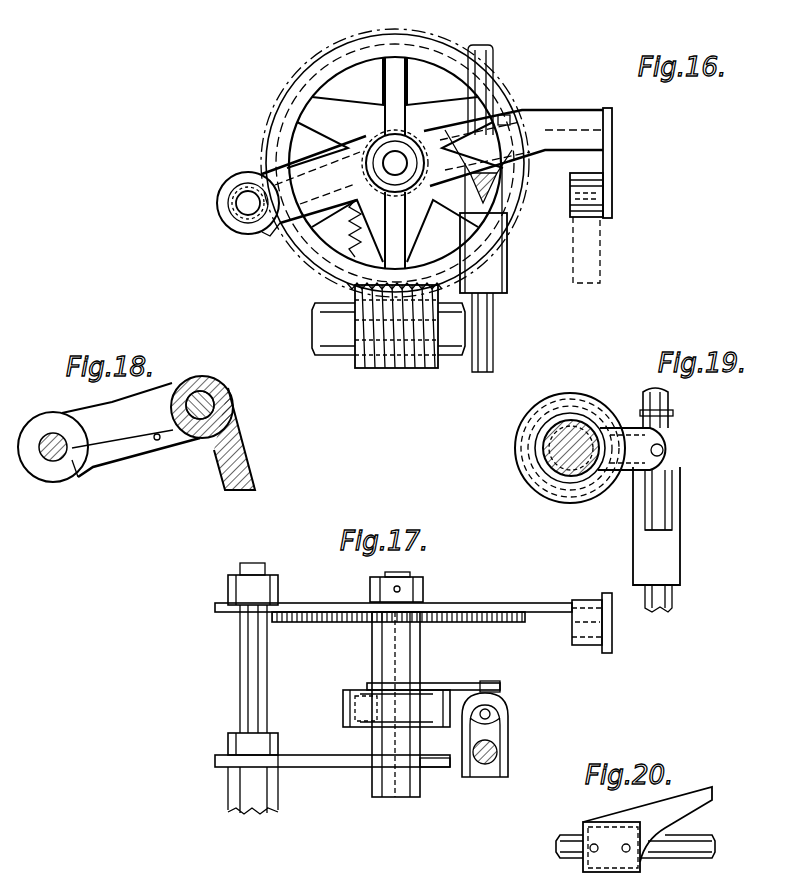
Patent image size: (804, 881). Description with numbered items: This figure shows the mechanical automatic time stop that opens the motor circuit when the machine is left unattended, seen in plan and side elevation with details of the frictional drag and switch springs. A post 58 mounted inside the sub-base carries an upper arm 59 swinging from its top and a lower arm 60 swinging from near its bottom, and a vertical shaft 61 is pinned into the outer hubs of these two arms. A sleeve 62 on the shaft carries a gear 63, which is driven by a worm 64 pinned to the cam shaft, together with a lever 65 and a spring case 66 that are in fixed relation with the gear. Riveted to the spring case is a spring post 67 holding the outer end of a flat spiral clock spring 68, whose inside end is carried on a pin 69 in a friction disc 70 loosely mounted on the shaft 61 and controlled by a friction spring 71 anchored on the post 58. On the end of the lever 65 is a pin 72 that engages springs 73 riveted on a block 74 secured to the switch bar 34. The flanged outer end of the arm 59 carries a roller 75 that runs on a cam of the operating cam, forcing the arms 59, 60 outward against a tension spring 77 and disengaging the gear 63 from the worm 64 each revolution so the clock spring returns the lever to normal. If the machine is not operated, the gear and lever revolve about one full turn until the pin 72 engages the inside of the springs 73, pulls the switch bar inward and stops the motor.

In FIG. 17, the switch bar 34 is at (492, 762).
In FIG. 19, the switch bar 34 is at (676, 600).
In FIG. 16, the post 58 is at (245, 204).
In FIG. 17, the post 58 is at (245, 665).
In FIG. 18, the post 58 is at (45, 460).
In FIG. 16, the arm 59 is at (570, 128).
In FIG. 17, the arm 59 is at (500, 605).
In FIG. 16, the arm 60 is at (270, 158).
In FIG. 17, the arm 60 is at (340, 770).
In FIG. 18, the arm 60 is at (115, 460).
In FIG. 16, the vertical shaft 61 is at (388, 158).
In FIG. 17, the vertical shaft 61 is at (393, 575).
In FIG. 18, the vertical shaft 61 is at (210, 395).
In FIG. 19, the vertical shaft 61 is at (556, 490).
In FIG. 17, the sleeve 62 is at (422, 650).
In FIG. 19, the sleeve 62 is at (569, 500).
In FIG. 16, the gear 63 is at (428, 52).
In FIG. 17, the gear 63 is at (512, 622).
In FIG. 16, the worm 64 is at (395, 370).
In FIG. 16, the lever 65 is at (500, 117).
In FIG. 17, the lever 65 is at (468, 684).
In FIG. 19, the lever 65 is at (640, 430).
In FIG. 17, the spring case 66 is at (345, 692).
In FIG. 19, the spring case 66 is at (545, 405).
In FIG. 19, the spring post 67 is at (622, 472).
In FIG. 19, the clock spring 68 is at (520, 477).
In FIG. 17, the pin 69 is at (360, 710).
In FIG. 18, the pin 69 is at (160, 442).
In FIG. 19, the pin 69 is at (537, 447).
In FIG. 17, the friction disc 70 is at (428, 770).
In FIG. 18, the friction disc 70 is at (232, 402).
In FIG. 16, the friction spring 71 is at (286, 228).
In FIG. 17, the friction spring 71 is at (320, 755).
In FIG. 18, the friction spring 71 is at (80, 470).
In FIG. 17, the pin 72 is at (490, 720).
In FIG. 19, the pin 72 is at (665, 448).
In FIG. 16, the springs 73 is at (480, 222).
In FIG. 17, the springs 73 is at (505, 718).
In FIG. 19, the springs 73 is at (640, 507).
In FIG. 20, the springs 73 is at (690, 811).
In FIG. 16, the block 74 is at (490, 278).
In FIG. 17, the block 74 is at (480, 780).
In FIG. 19, the block 74 is at (662, 558).
In FIG. 16, the roller 75 is at (598, 186).
In FIG. 17, the roller 75 is at (588, 648).
In FIG. 16, the tension spring 77 is at (345, 230).